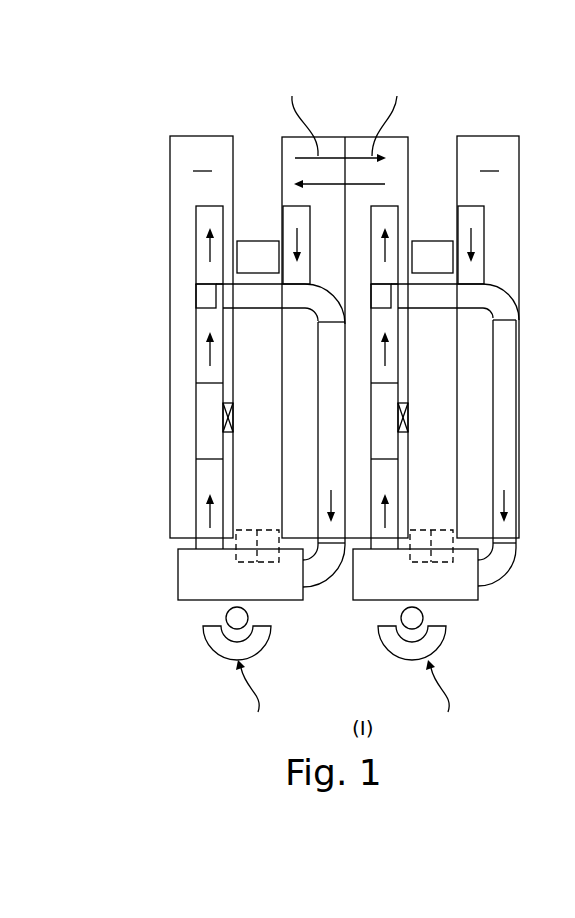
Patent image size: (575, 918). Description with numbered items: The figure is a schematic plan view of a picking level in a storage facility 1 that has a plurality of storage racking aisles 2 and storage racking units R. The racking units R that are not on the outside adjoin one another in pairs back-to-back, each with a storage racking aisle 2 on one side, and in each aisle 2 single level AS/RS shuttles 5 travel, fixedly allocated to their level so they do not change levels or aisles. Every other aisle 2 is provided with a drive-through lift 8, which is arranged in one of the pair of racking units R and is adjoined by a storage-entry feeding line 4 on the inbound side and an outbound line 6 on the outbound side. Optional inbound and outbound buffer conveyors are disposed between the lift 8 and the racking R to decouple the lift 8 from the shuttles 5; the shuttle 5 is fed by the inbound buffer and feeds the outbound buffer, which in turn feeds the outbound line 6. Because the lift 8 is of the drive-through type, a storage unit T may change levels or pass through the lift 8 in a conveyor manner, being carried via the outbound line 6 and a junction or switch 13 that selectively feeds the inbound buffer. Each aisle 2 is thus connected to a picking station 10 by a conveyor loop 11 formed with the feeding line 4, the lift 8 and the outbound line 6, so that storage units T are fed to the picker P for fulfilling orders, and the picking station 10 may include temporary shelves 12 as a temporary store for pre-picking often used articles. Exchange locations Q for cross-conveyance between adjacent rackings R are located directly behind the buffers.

The storage facility 1 is at (147, 101).
The storage racking aisle 2 is at (262, 171).
The inbound line 4 is at (203, 475).
The single level AS/RS shuttle 5 is at (345, 257).
The outbound line 6 is at (507, 413).
The lift 8 is at (203, 420).
The picking station 10 is at (292, 593).
The conveyor loop 11 is at (518, 580).
The temporary shelves 12 is at (240, 552).
The junction or switch 13 is at (210, 296).